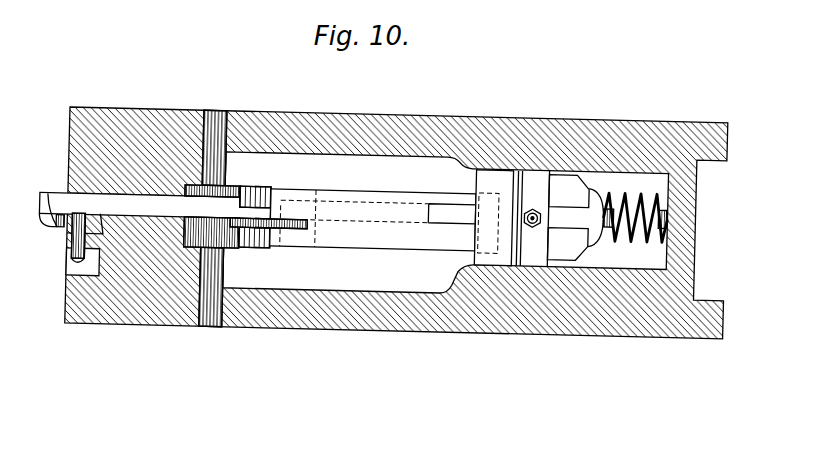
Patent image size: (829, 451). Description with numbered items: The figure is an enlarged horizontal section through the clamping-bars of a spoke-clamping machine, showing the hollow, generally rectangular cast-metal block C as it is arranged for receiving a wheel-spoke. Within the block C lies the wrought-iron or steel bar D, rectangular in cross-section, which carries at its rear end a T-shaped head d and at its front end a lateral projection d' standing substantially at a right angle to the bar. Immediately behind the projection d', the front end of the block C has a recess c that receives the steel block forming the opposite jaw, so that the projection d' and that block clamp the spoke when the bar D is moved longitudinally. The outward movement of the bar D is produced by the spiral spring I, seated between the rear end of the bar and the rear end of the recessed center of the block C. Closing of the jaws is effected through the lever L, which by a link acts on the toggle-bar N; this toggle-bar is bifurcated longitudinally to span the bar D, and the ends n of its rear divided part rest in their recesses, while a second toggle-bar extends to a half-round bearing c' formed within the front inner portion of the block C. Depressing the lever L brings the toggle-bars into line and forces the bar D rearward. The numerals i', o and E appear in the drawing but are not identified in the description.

The block C is at (447, 114).
The partition plate i' is at (212, 233).
The spiral spring I is at (49, 193).
The lateral projection d' is at (42, 220).
The ends of rear divided part n is at (70, 230).
The recess c is at (138, 219).
The bearing c' is at (193, 236).
The toggle-bar N is at (357, 219).
The bar D is at (272, 214).
The piston head o is at (239, 182).
The valve cup E is at (568, 218).
The T-shaped head d is at (605, 209).
The lever L is at (635, 229).